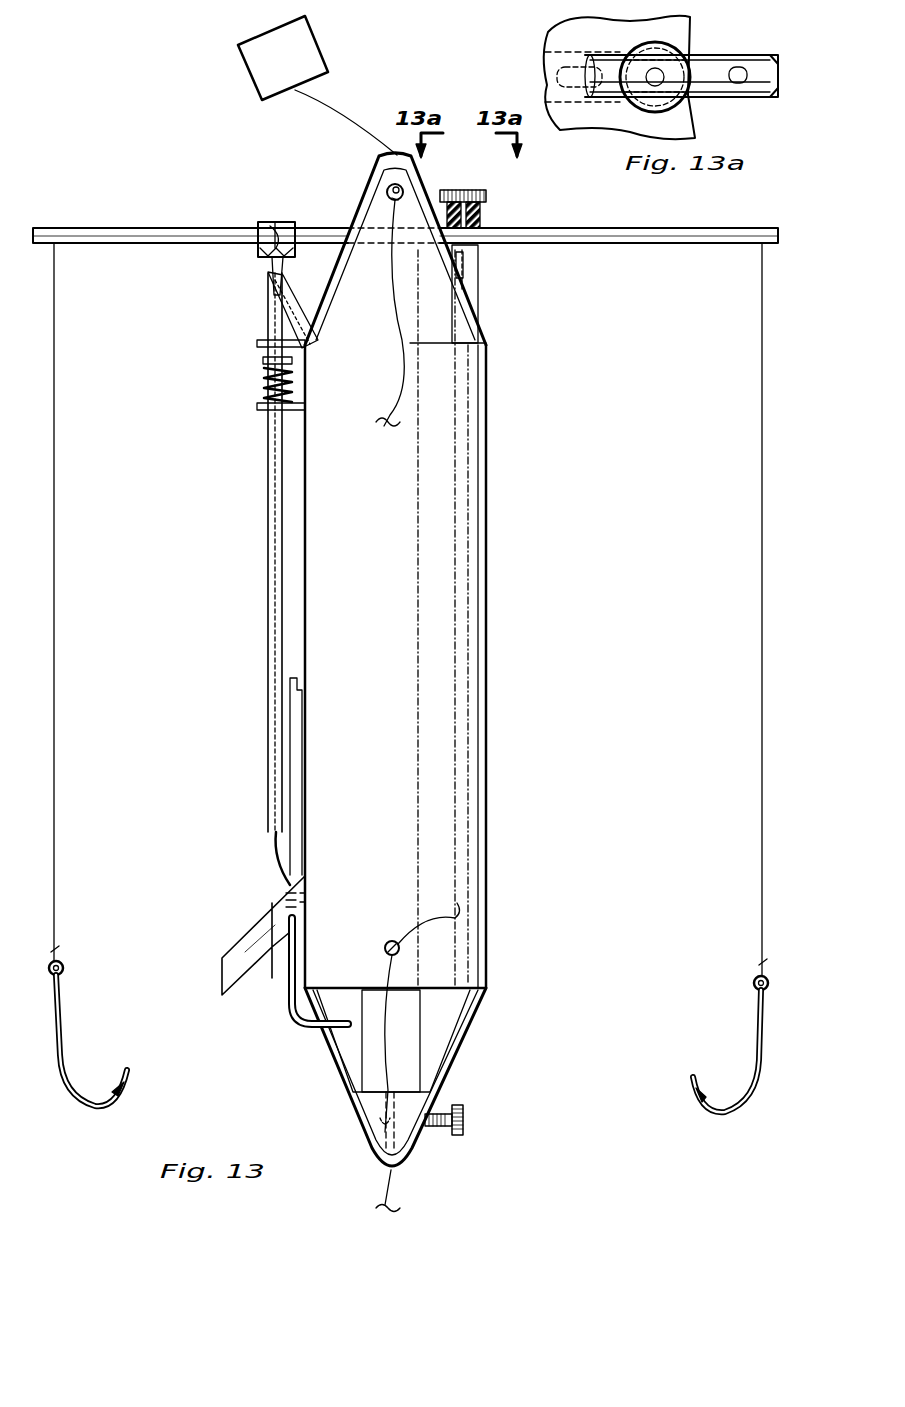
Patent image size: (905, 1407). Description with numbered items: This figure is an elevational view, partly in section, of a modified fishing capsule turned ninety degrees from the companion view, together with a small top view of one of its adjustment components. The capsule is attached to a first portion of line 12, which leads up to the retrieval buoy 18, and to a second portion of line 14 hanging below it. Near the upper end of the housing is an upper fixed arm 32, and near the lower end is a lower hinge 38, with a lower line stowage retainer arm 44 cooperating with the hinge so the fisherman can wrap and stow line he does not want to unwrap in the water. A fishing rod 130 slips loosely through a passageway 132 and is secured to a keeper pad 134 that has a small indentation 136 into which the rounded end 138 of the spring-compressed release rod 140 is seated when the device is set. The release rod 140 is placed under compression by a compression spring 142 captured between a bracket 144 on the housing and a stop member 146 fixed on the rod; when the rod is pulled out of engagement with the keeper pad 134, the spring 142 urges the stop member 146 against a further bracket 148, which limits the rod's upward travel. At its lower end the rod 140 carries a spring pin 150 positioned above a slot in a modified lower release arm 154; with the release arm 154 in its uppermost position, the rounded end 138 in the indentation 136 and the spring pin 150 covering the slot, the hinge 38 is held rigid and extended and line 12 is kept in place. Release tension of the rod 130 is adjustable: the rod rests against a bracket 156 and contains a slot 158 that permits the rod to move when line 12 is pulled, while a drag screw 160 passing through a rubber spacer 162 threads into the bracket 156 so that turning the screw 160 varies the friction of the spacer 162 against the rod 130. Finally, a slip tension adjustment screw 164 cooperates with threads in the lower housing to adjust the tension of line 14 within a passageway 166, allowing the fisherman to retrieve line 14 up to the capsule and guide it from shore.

In FIG. 13, the first portion of line 12 is at (56, 690).
In FIG. 13, the second portion of line 14 is at (386, 1196).
In FIG. 13, the retrieval buoy 18 is at (252, 38).
In FIG. 13, the upper fixed arm 32 is at (298, 318).
In FIG. 13, the lower hinge 38 is at (245, 948).
In FIG. 13, the lower line stowage retainer arm 44 is at (288, 1004).
In FIG. 13, the fishing rod 130 is at (104, 227).
In FIG. 13a, the fishing rod 130 is at (753, 98).
In FIG. 13, the passageway 132 is at (355, 226).
In FIG. 13, the keeper pad 134 is at (283, 232).
In FIG. 13, the indentation 136 is at (270, 263).
In FIG. 13, the rounded end 138 is at (281, 242).
In FIG. 13, the release rod 140 is at (278, 496).
In FIG. 13, the compression spring 142 is at (264, 381).
In FIG. 13, the bracket 144 is at (260, 407).
In FIG. 13, the stop member 146 is at (262, 360).
In FIG. 13, the bracket 148 is at (260, 343).
In FIG. 13, the spring pin 150 is at (276, 864).
In FIG. 13, the lower release arm 154 is at (296, 750).
In FIG. 13, the bracket 156 is at (470, 270).
In FIG. 13a, the bracket 156 is at (620, 40).
In FIG. 13a, the slot 158 is at (740, 68).
In FIG. 13, the drag screw 160 is at (488, 195).
In FIG. 13a, the drag screw 160 is at (690, 100).
In FIG. 13, the rubber spacer 162 is at (482, 222).
In FIG. 13a, the rubber spacer 162 is at (650, 108).
In FIG. 13, the slip tension adjustment screw 164 is at (456, 1105).
In FIG. 13, the passageway 166 is at (386, 1122).